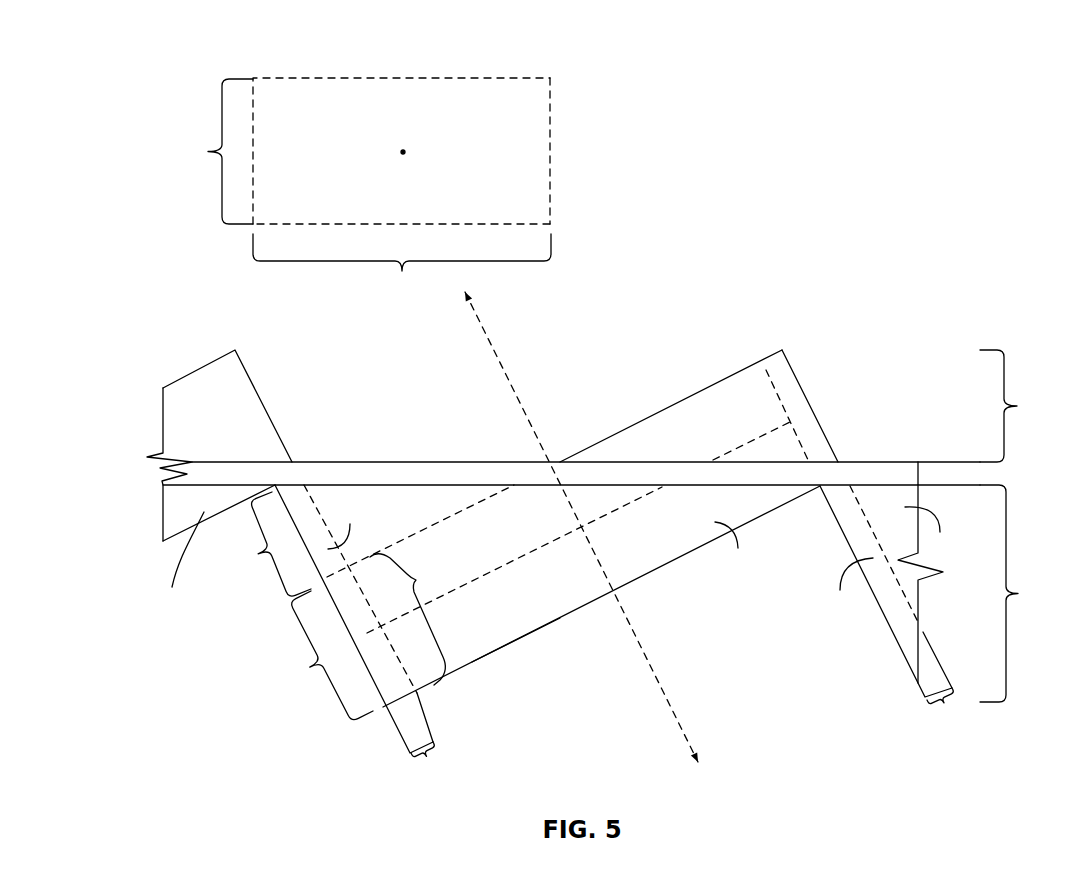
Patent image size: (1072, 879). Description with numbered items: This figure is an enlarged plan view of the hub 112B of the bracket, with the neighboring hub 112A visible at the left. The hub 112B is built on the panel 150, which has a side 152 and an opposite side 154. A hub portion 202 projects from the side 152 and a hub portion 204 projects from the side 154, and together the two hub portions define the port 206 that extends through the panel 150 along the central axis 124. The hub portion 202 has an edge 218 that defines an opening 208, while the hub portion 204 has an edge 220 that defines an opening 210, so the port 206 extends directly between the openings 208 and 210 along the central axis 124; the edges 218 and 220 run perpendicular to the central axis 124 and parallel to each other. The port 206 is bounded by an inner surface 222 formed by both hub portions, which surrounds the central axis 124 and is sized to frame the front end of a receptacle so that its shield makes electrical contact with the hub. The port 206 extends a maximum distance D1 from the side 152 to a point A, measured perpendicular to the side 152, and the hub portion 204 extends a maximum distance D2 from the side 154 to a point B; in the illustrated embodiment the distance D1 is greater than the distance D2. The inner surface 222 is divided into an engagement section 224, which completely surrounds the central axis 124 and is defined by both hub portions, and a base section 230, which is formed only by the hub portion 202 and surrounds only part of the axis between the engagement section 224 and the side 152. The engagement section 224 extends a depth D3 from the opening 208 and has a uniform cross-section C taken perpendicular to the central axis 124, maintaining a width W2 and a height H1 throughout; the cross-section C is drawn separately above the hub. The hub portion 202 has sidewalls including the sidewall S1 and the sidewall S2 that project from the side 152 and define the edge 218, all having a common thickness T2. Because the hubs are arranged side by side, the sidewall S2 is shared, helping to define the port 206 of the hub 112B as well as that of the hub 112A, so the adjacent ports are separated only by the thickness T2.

The hub 112A is at (207, 500).
The hub 112B is at (382, 503).
The central axis 124 is at (403, 150).
The panel 150 is at (888, 476).
The side 152 is at (178, 502).
The side 154 is at (850, 446).
The hub portion 202 is at (472, 636).
The hub portion 204 is at (787, 366).
The port 206 is at (538, 195).
The opening 208 is at (676, 584).
The opening 210 is at (629, 424).
The edge 218 is at (537, 632).
The edge 220 is at (700, 390).
The inner surface 222 is at (444, 208).
The engagement section 224 is at (271, 46).
The base section 230 is at (263, 544).
The point A is at (411, 700).
The point B is at (757, 362).
The cross-section C is at (528, 78).
The sidewall S1 is at (558, 563).
The sidewall S2 is at (600, 562).
The thickness T2 is at (688, 736).
The height H1 is at (215, 151).
The width W2 is at (402, 270).
The distance D1 is at (1014, 593).
The distance D2 is at (1014, 406).
The depth D3 is at (408, 619).